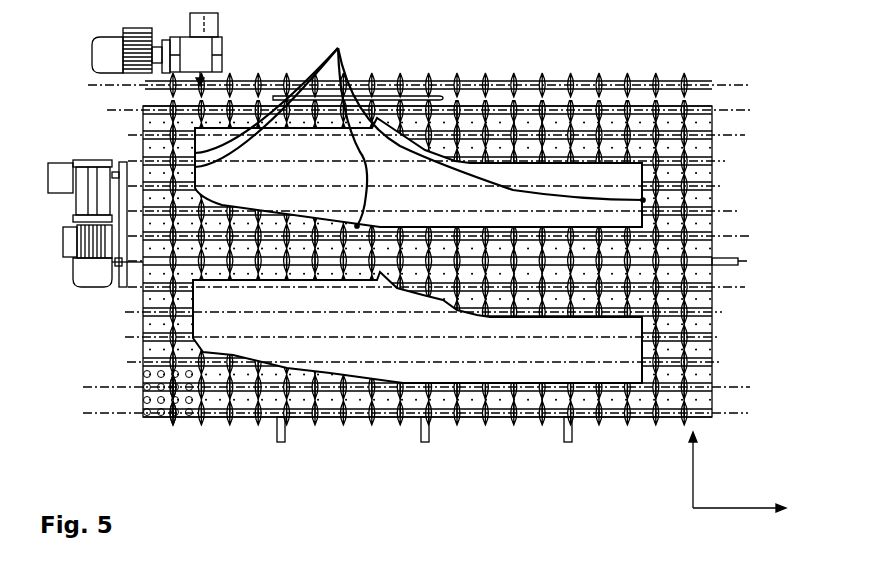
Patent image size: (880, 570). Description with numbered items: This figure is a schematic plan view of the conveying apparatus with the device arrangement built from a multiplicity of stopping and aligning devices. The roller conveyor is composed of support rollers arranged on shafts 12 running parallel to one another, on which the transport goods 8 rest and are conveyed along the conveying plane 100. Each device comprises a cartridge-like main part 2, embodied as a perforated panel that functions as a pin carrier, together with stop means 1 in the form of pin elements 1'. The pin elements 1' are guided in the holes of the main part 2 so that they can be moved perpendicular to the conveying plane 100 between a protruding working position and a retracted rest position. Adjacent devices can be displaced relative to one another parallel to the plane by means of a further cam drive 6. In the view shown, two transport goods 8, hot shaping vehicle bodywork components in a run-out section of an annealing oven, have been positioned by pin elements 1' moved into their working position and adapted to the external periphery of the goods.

The stop means 1 is at (428, 226).
The pin elements 1' is at (201, 446).
The main part 2 is at (438, 400).
The further cam drive 6 is at (283, 442).
The transport goods 8 is at (345, 367).
The shafts 12 is at (208, 417).
The conveying plane 100 is at (737, 472).